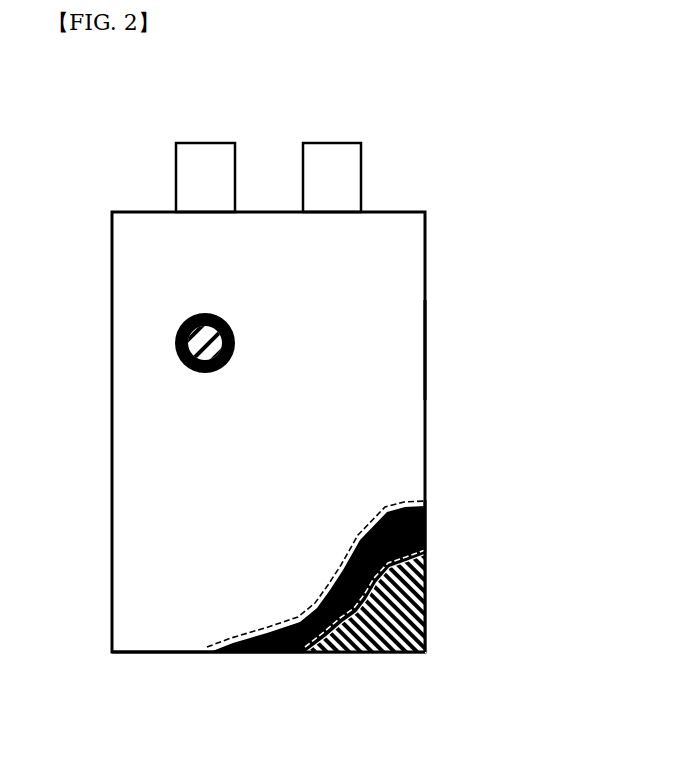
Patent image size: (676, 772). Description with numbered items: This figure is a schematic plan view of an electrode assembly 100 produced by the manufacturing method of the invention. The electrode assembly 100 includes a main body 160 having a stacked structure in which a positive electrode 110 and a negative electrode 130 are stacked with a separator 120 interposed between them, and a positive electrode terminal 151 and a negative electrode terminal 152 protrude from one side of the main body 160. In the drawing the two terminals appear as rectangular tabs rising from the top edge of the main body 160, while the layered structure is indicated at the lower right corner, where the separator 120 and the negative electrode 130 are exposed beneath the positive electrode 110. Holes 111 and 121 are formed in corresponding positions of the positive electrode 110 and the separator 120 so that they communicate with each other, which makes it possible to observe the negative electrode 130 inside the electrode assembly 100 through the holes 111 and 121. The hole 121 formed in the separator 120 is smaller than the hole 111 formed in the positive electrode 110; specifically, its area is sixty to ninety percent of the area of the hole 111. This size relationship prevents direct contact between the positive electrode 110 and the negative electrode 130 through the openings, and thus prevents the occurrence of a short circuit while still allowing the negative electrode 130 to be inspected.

The electrode assembly 100 is at (113, 140).
The positive electrode 110 is at (407, 480).
The hole 111 is at (207, 373).
The separator 120 is at (407, 545).
The hole 121 is at (197, 323).
The negative electrode 130 is at (407, 613).
The positive electrode terminal 151 is at (233, 142).
The negative electrode terminal 152 is at (360, 142).
The main body 160 is at (424, 353).